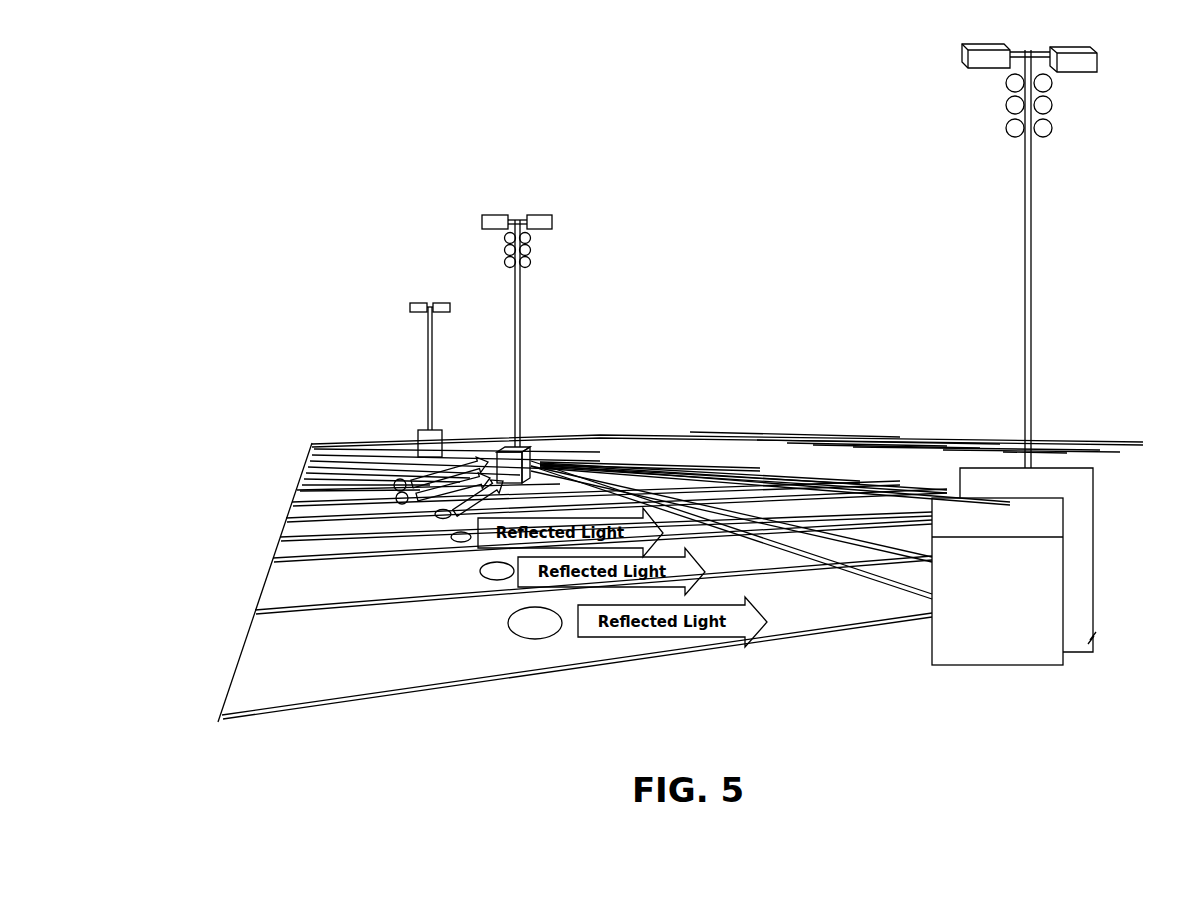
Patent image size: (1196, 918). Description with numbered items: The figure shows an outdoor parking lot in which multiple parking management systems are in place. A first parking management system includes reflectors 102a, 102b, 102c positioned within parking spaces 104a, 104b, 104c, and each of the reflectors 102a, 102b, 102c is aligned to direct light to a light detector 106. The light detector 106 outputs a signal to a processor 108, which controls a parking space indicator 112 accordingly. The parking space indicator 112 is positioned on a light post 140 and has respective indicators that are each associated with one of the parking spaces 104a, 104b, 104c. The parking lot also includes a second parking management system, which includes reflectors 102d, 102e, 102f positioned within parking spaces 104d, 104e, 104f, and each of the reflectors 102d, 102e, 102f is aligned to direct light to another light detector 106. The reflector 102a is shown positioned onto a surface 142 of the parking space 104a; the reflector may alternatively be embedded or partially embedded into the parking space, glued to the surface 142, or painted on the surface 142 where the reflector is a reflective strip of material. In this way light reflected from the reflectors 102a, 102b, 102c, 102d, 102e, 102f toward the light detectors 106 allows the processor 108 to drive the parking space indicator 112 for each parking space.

The reflector 102a is at (508, 622).
The reflector 102b is at (480, 571).
The reflector 102c is at (451, 537).
The reflector 102d is at (435, 514).
The reflector 102e is at (397, 493).
The reflector 102f is at (396, 480).
The parking space 104a is at (593, 604).
The parking space 104b is at (602, 554).
The parking space 104c is at (301, 548).
The parking space 104d is at (308, 527).
The parking space 104e is at (309, 508).
The parking space 104f is at (309, 490).
The light detector 106 is at (523, 470).
The processor 108 is at (1055, 527).
The parking space indicator 112 is at (1006, 92).
The light post 140 is at (1025, 255).
The surface 142 is at (388, 648).